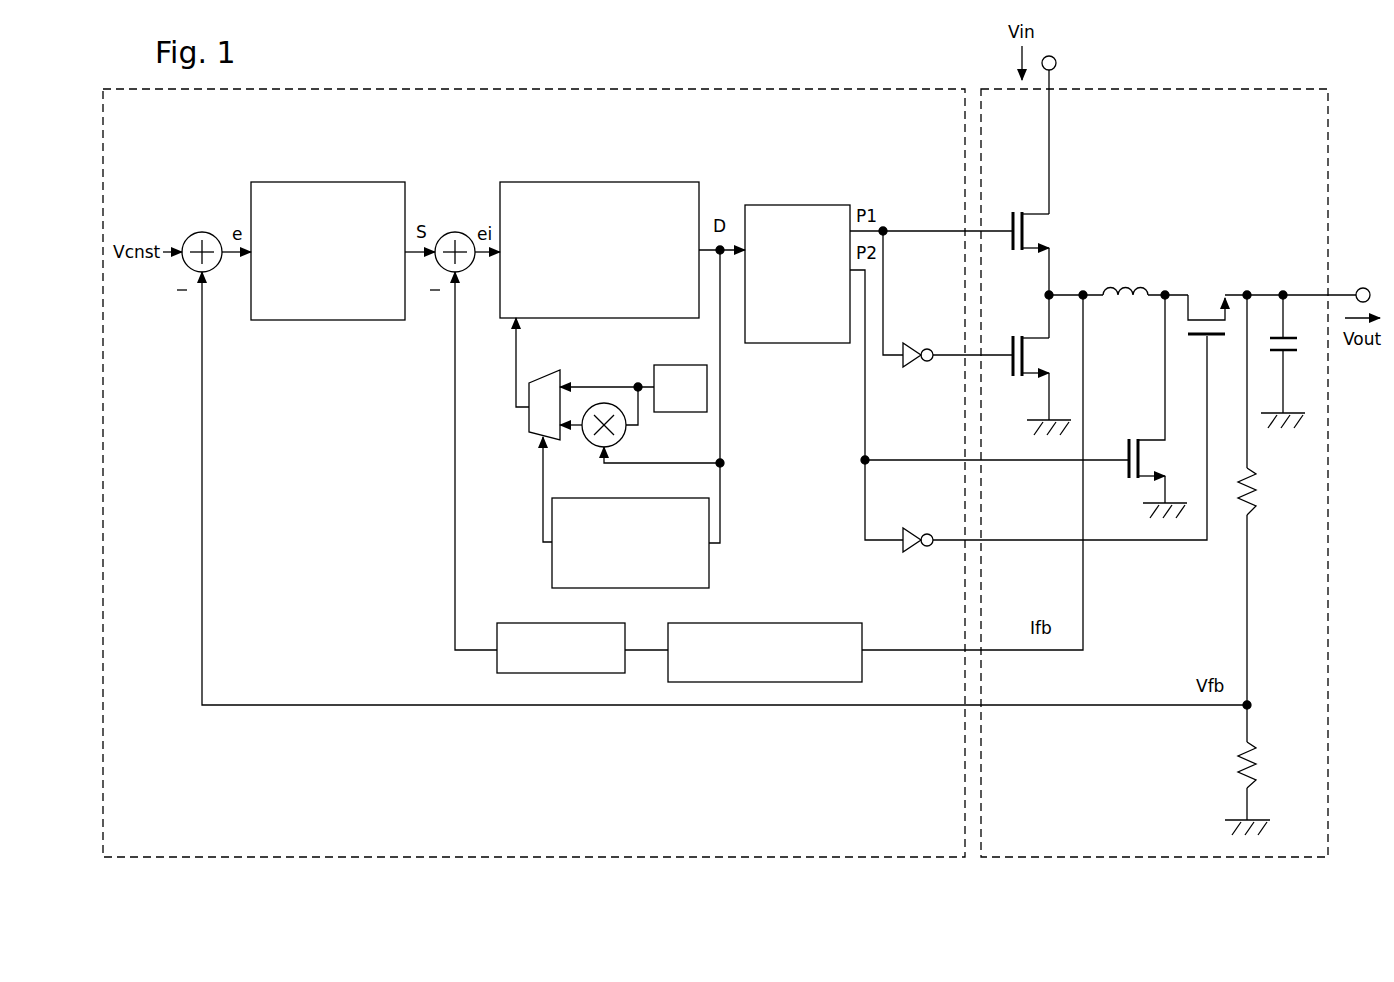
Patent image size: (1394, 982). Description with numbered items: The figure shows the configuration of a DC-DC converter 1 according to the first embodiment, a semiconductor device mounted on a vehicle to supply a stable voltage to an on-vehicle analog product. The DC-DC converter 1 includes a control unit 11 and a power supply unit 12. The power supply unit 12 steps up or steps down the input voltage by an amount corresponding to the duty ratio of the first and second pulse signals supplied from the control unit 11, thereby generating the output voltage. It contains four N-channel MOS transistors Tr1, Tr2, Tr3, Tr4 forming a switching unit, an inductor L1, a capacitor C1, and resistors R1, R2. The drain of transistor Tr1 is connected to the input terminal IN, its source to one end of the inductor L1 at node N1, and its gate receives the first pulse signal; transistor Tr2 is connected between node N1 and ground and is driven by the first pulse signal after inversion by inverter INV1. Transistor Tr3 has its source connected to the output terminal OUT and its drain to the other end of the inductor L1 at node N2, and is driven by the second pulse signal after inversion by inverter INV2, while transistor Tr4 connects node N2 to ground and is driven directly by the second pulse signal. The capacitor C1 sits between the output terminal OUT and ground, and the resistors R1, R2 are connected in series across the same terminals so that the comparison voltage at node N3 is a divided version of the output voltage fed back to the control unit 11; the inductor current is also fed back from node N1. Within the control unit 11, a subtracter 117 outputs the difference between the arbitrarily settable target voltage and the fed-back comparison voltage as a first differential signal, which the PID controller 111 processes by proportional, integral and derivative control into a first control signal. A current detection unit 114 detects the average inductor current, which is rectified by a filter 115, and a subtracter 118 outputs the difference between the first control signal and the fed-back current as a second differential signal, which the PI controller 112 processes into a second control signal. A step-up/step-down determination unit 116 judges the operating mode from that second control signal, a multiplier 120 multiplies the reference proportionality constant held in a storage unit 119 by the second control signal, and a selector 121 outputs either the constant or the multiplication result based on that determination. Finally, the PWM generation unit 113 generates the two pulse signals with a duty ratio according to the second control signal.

The DC-DC converter 1 is at (786, 23).
The control unit 11 is at (585, 89).
The power supply unit 12 is at (1160, 89).
The PID controller 111 is at (338, 182).
The PI controller 112 is at (617, 182).
The PWM generation unit 113 is at (803, 205).
The current detection unit 114 is at (789, 623).
The filter 115 is at (516, 623).
The step-up/step-down determination unit 116 is at (709, 563).
The subtracter 117 is at (206, 232).
The subtracter 118 is at (462, 232).
The storage unit 119 is at (707, 386).
The multiplier 120 is at (622, 441).
The selector 121 is at (540, 372).
The transistor Tr1 is at (1028, 211).
The transistor Tr2 is at (1028, 335).
The transistor Tr3 is at (1212, 290).
The transistor Tr4 is at (1146, 436).
The inverter INV1 is at (914, 342).
The inverter INV2 is at (914, 528).
The inductor L1 is at (1126, 287).
The capacitor C1 is at (1292, 354).
The resistor R1 is at (1256, 500).
The resistor R2 is at (1256, 772).
The node N1 is at (1086, 290).
The node N2 is at (1168, 290).
The node N3 is at (1252, 703).
The input terminal IN is at (1056, 63).
The output terminal OUT is at (1363, 288).